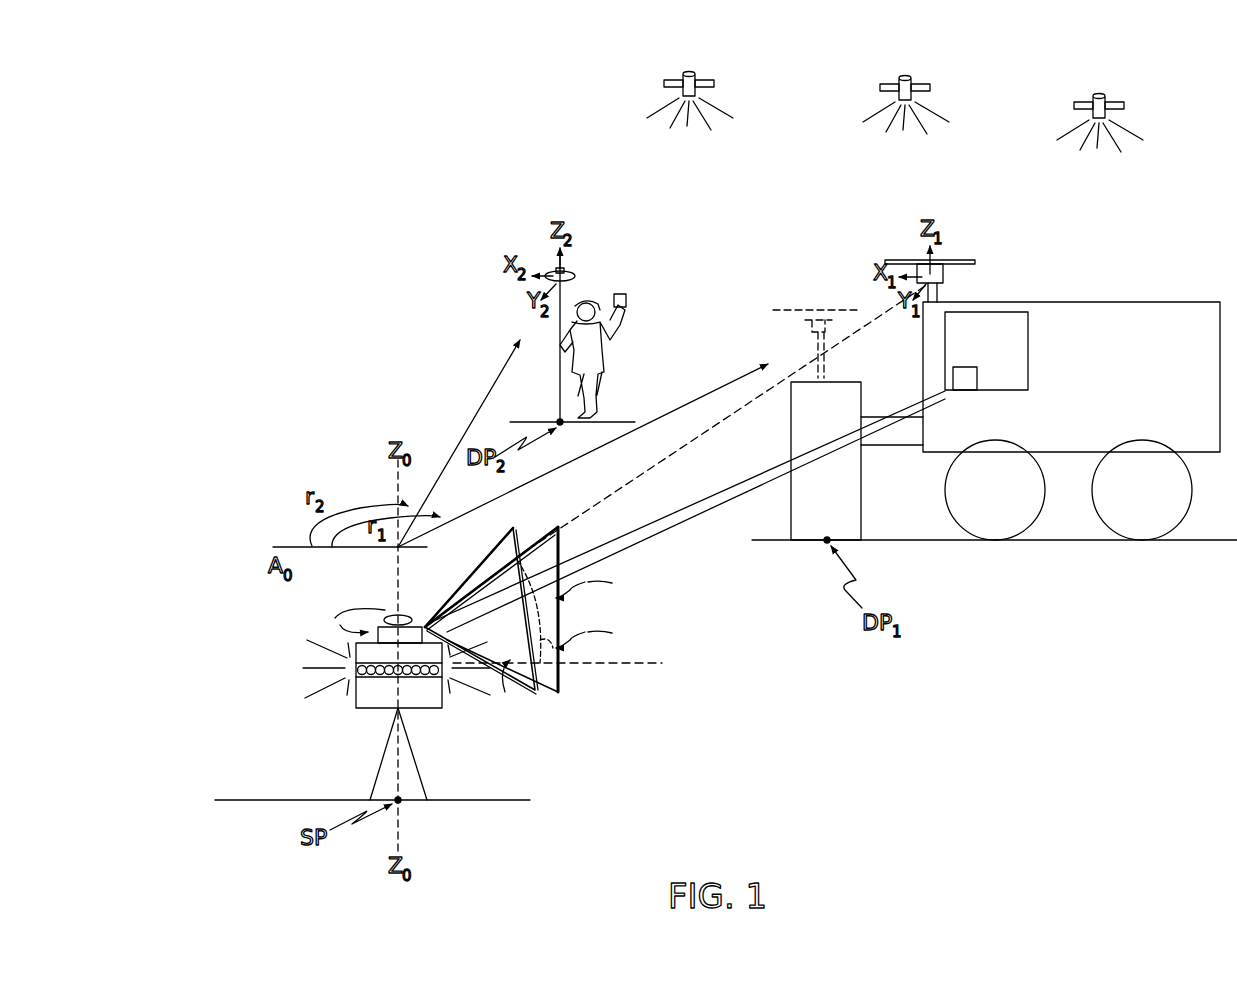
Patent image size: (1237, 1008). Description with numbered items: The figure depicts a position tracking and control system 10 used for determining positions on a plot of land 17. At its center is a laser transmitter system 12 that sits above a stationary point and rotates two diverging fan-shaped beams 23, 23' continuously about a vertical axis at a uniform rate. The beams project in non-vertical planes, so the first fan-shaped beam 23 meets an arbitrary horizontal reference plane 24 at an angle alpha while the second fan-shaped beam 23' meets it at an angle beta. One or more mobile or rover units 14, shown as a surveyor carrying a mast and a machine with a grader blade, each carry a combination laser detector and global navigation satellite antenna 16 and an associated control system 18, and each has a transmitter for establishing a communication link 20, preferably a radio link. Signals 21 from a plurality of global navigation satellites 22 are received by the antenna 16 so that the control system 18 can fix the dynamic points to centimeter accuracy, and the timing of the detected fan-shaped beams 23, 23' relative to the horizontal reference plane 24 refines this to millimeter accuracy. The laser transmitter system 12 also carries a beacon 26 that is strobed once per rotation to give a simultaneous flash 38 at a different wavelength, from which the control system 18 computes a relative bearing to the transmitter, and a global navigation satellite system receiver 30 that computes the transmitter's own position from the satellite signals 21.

The position tracking and control (PTC) system 10 is at (262, 398).
The laser transmitter system 12 is at (362, 710).
The mobile or rover unit 14 is at (612, 388).
The combination laser detector and global navigation satellite (CLDGNS) antenna 16 is at (576, 271).
The plot of land 17 is at (531, 418).
The control system 18 is at (620, 298).
The communication link 20 is at (688, 512).
The signals 21 is at (684, 118).
The global navigation satellites 22 is at (683, 72).
The first fan-shaped beam 23 is at (499, 640).
The second fan-shaped beam 23' is at (528, 622).
The horizontal reference plane 24 is at (645, 665).
The beacon 26 is at (420, 680).
The global navigation satellite system (GNSS) receiver 30 is at (405, 616).
The flash 38 is at (300, 672).